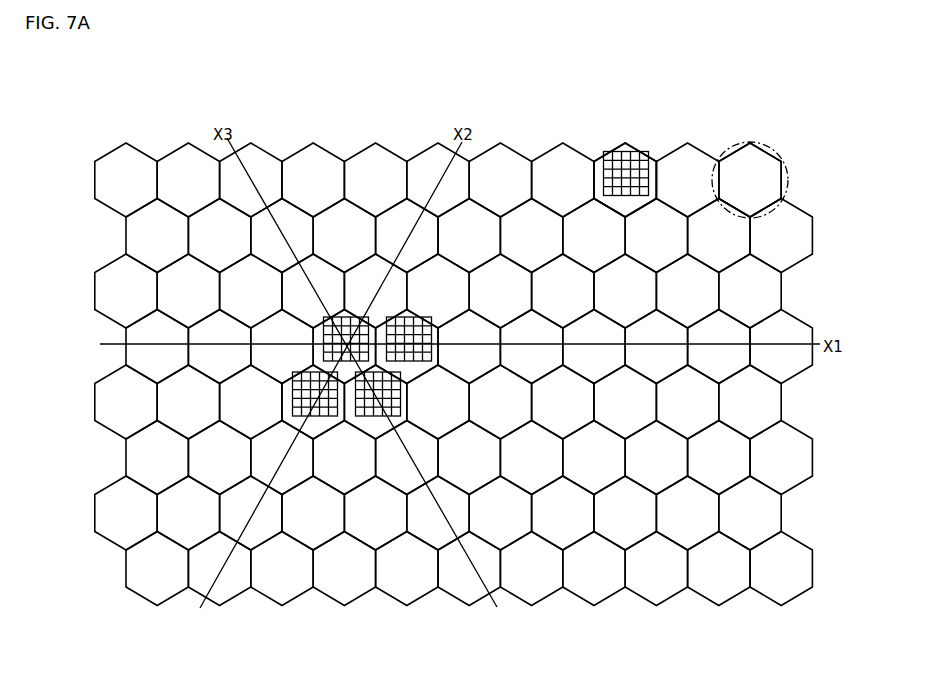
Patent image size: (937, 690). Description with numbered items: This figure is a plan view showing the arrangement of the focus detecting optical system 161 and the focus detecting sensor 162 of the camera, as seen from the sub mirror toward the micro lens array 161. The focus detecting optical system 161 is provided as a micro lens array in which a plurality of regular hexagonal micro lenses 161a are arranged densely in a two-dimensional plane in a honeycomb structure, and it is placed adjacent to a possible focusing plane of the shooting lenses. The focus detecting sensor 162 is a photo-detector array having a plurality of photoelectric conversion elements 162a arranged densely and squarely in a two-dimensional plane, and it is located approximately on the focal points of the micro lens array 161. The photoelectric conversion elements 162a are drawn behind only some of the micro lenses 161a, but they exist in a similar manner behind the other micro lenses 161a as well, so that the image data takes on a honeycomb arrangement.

The focus detecting optical system 161 is at (718, 106).
The micro lens 161a is at (752, 175).
The focus detecting sensor 162 is at (618, 151).
The photoelectric conversion element 162a is at (633, 168).